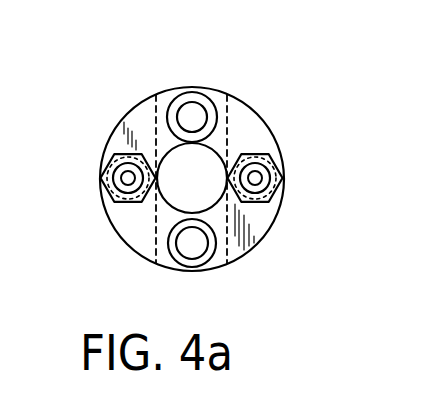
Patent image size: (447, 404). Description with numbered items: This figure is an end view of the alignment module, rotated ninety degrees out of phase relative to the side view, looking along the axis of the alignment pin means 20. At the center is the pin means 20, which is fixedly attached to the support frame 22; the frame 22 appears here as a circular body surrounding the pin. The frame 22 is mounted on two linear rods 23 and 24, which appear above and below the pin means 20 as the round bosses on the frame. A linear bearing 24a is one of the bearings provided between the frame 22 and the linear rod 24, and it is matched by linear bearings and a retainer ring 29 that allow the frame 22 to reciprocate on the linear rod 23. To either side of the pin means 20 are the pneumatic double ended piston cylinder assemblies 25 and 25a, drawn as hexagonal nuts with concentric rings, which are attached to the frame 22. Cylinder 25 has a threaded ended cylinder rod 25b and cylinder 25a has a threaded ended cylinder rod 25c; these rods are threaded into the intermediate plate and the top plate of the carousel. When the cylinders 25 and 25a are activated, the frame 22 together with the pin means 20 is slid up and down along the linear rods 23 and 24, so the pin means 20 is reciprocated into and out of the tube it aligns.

The alignment pin means 20 is at (210, 160).
The support frame 22 is at (243, 245).
The linear rod 23 is at (184, 106).
The linear rod 24 is at (188, 246).
The linear bearing 24a is at (213, 259).
The pneumatic double ended piston cylinder assembly 25 is at (257, 178).
The pneumatic double ended piston cylinder assembly 25a is at (127, 177).
The threaded ended cylinder rod 25b is at (262, 198).
The threaded ended cylinder rod 25c is at (117, 205).
The retainer ring 29 is at (213, 95).